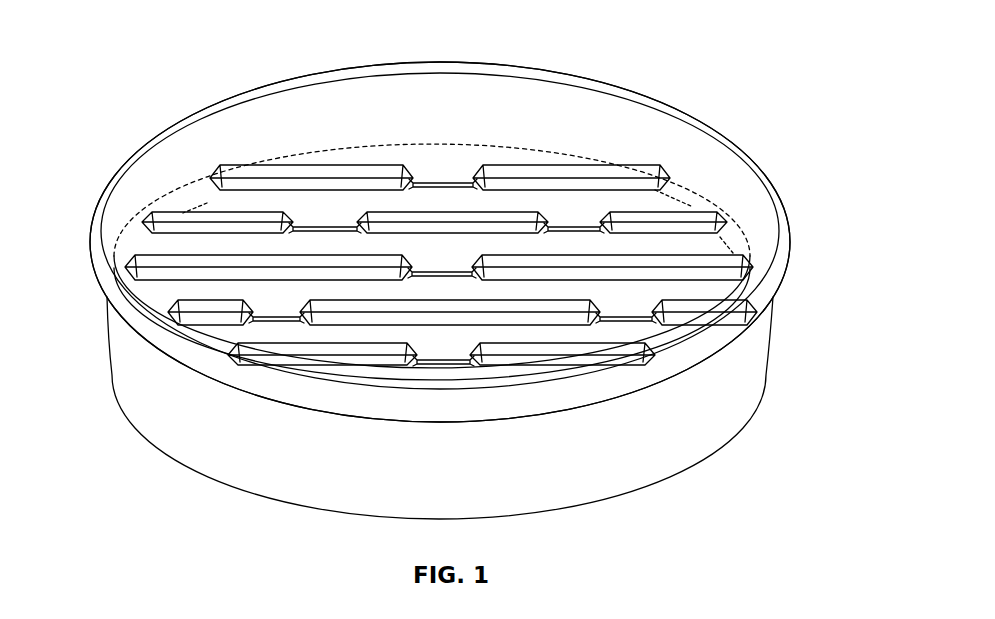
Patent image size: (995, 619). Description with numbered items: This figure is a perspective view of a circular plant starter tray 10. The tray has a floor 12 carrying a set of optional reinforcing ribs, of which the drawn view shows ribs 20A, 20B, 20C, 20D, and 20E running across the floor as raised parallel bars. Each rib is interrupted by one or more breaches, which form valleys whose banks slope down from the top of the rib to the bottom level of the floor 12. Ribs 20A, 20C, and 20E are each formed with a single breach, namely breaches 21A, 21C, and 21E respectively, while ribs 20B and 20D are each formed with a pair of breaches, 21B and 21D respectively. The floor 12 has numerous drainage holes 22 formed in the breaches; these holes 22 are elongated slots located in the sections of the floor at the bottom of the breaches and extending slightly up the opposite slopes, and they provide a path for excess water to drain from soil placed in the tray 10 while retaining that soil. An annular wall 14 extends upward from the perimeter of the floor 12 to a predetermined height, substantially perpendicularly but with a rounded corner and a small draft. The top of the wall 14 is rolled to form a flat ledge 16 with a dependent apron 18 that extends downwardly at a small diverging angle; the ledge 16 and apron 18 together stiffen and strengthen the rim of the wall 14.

The circular plant starter tray 10 is at (130, 44).
The floor 12 is at (228, 248).
The annular wall 14 is at (748, 376).
The flat ledge 16 is at (207, 107).
The dependent apron 18 is at (104, 297).
The reinforcing rib 20A is at (607, 173).
The reinforcing rib 20B is at (520, 212).
The reinforcing rib 20C is at (695, 262).
The reinforcing rib 20D is at (580, 322).
The reinforcing rib 20E is at (490, 362).
The breach 21A is at (434, 172).
The breach 21B is at (580, 215).
The breach 21C is at (435, 265).
The breach 21D is at (636, 308).
The breach 21E is at (426, 342).
The drainage holes 22 is at (443, 193).